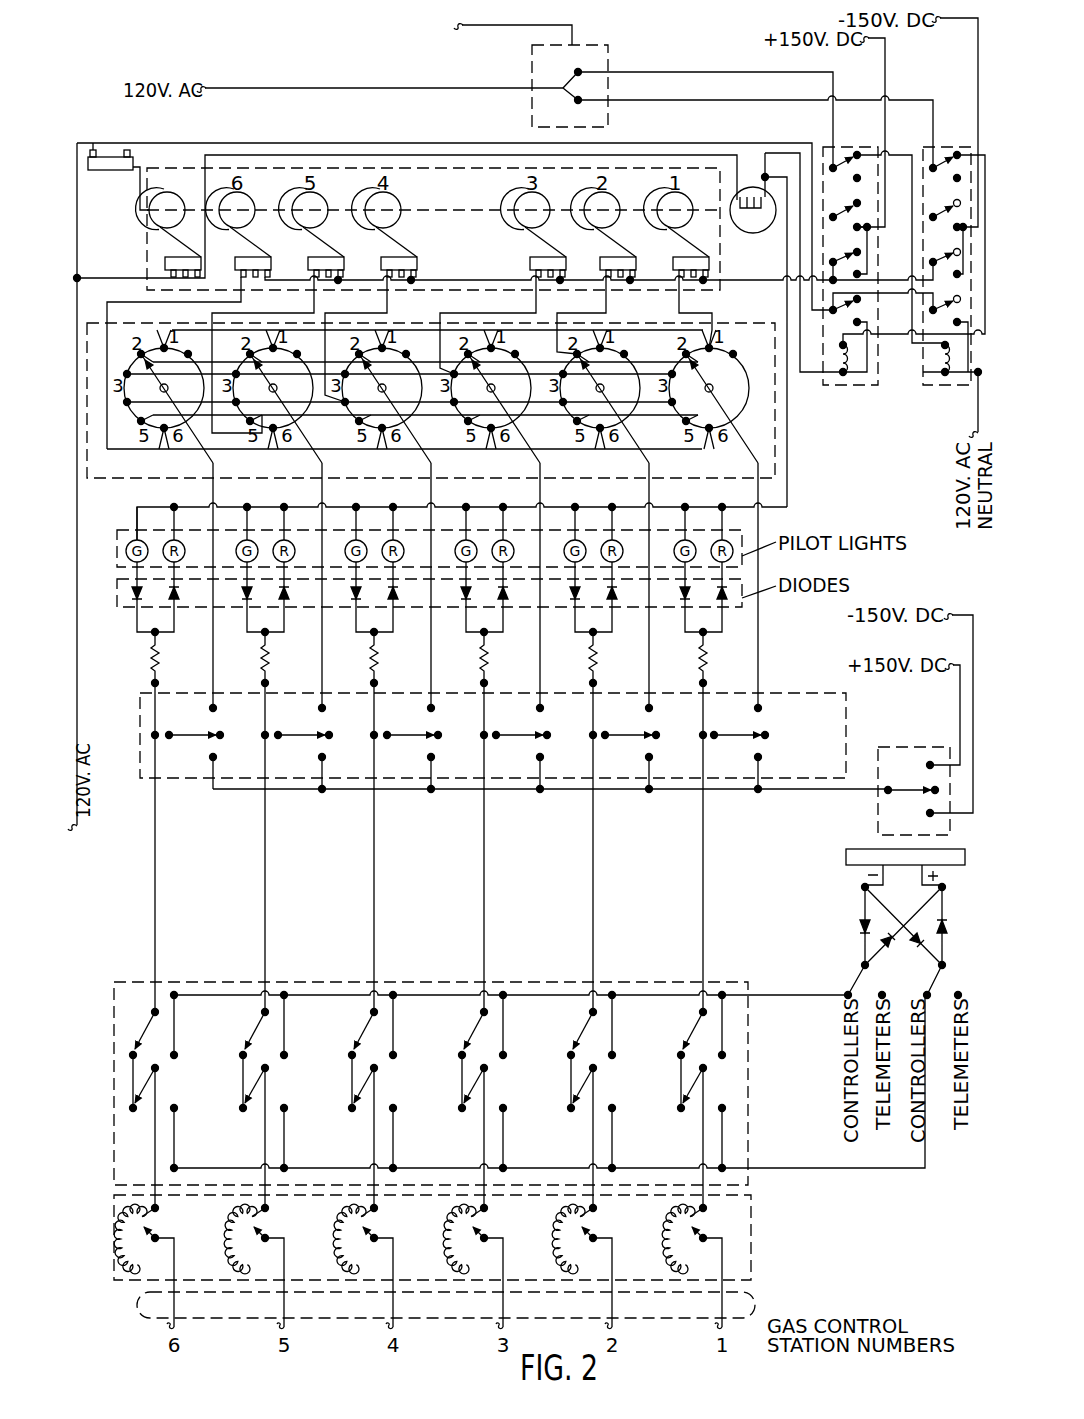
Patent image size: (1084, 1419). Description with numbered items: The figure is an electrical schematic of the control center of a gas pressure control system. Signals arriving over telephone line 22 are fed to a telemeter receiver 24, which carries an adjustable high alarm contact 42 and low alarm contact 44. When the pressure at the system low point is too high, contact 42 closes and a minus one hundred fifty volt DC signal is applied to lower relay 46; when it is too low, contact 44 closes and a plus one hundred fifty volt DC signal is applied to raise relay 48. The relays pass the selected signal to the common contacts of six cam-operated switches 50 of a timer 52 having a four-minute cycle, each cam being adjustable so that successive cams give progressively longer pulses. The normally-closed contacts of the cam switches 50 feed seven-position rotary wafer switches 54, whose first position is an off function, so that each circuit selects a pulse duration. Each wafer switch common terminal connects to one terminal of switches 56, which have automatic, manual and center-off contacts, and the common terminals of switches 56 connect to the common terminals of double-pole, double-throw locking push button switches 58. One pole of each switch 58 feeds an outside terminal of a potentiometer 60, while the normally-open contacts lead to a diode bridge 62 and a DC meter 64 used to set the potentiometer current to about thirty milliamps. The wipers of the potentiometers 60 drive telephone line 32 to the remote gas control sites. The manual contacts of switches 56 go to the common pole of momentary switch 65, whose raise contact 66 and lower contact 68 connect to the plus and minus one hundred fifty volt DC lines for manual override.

The telephone line 22 is at (574, 33).
The telemeter receiver 24 is at (531, 105).
The telephone line 32 is at (755, 1300).
The high alarm contact 42 is at (586, 78).
The low alarm contact 44 is at (586, 102).
The lower relay 46 is at (853, 386).
The raise relay 48 is at (930, 386).
The cam-operated switches 50 is at (145, 222).
The timer 52 is at (760, 233).
The rotary wafer switches 54 is at (766, 323).
The single-pole, double-pole, double-throw switches 56 is at (140, 748).
The double-pole, double-throw, locking, push button switches 58 is at (114, 982).
The potentiometers 60 is at (751, 1250).
The diode bridge 62 is at (865, 915).
The DC meter 64 is at (846, 857).
The momentary-contact, single-pole, double-throw switch 65 is at (905, 747).
The raise contact 66 is at (930, 765).
The lower contact 68 is at (930, 814).